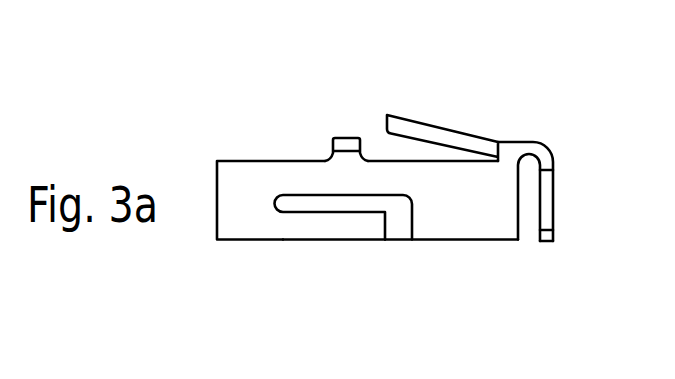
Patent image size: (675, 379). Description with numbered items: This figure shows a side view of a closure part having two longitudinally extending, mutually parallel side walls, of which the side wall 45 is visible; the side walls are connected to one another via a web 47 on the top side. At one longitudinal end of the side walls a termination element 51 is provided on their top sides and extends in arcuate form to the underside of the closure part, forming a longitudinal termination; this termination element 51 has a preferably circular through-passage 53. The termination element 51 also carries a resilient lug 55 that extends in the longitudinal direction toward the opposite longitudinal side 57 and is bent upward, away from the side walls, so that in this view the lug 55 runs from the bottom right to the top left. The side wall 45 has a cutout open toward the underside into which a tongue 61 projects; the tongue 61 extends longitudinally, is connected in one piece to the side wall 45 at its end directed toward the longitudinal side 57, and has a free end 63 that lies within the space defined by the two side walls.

The side wall 45 is at (238, 223).
The web 47 is at (337, 137).
The termination element 51 is at (537, 141).
The through-passage 53 is at (545, 186).
The resilient lug 55 is at (417, 127).
The longitudinal side 57 is at (188, 166).
The tongue 61 is at (363, 230).
The free end 63 is at (388, 224).